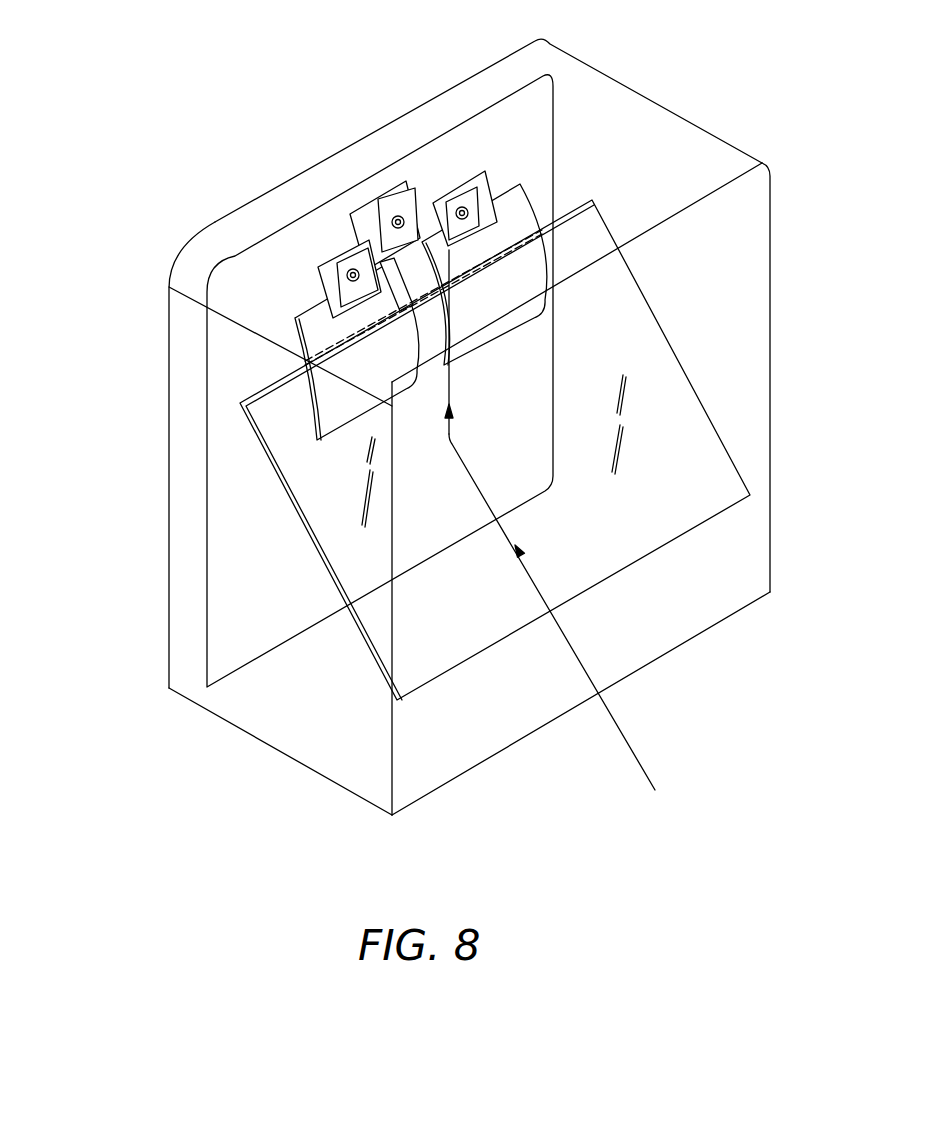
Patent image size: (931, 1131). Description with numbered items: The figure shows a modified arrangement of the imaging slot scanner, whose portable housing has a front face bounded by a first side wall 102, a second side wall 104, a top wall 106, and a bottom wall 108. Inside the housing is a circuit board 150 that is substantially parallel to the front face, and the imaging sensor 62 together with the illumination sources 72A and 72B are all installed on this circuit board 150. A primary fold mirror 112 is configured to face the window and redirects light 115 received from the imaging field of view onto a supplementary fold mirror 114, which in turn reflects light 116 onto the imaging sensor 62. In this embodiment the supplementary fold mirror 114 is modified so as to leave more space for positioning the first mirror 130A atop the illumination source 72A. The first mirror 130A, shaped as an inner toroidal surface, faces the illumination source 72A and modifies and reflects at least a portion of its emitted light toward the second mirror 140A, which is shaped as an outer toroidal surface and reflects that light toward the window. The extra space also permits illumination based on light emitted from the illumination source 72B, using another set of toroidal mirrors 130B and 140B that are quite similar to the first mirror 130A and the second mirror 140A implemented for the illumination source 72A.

The imaging sensor 62 is at (394, 216).
The illumination source 72A is at (340, 255).
The illumination source 72B is at (443, 245).
The first side wall 102 is at (178, 527).
The second side wall 104 is at (771, 246).
The top wall 106 is at (652, 130).
The bottom wall 108 is at (285, 741).
The primary fold mirror 112 is at (323, 560).
The supplementary fold mirror 114 is at (352, 216).
The light 115 is at (621, 722).
The light 116 is at (452, 427).
The first mirror 130A is at (318, 294).
The first mirror 130B is at (490, 180).
The second mirror 140A is at (317, 408).
The second mirror 140B is at (546, 246).
The circuit board 150 is at (402, 152).